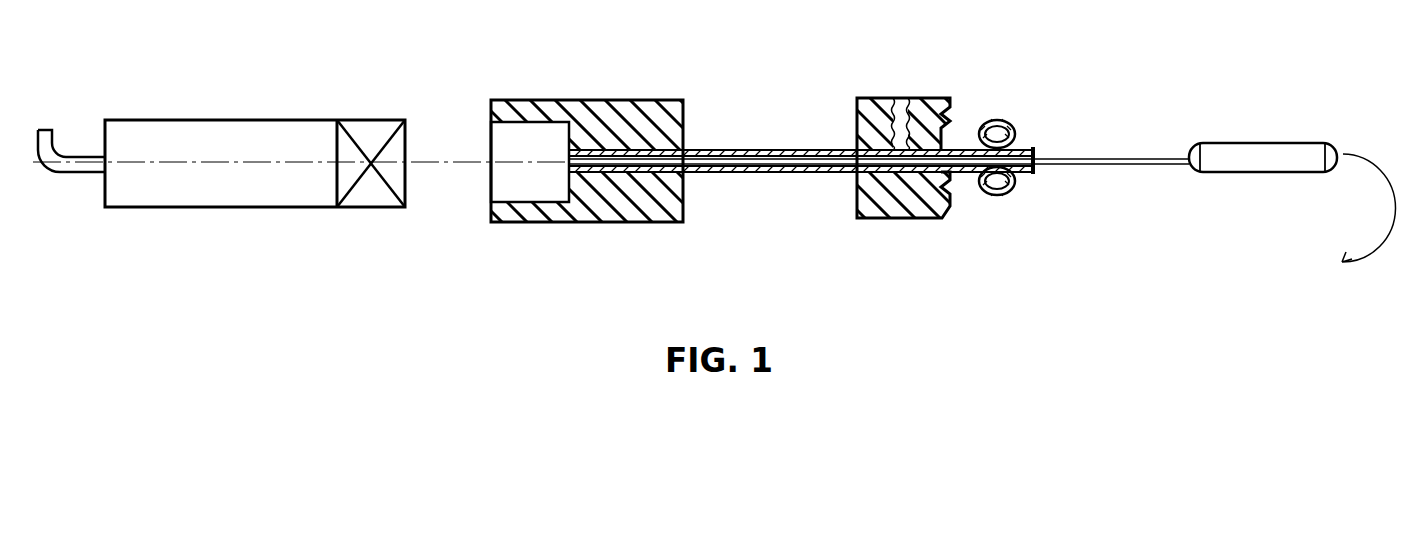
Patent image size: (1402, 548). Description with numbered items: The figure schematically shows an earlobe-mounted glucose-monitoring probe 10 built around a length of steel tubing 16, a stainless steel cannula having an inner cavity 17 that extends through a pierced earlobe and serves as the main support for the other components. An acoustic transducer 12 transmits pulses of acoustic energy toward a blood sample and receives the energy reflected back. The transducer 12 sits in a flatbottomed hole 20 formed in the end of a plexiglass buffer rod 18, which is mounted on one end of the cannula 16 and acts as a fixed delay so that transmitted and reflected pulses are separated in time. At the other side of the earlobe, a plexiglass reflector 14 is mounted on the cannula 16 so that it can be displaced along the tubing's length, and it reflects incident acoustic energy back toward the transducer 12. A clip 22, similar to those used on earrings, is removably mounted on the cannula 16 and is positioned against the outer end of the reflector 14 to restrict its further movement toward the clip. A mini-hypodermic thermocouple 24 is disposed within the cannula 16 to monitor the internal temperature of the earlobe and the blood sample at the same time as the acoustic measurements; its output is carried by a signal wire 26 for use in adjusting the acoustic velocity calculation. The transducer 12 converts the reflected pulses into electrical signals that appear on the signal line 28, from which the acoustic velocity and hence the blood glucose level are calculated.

The glucose-monitoring probe 10 is at (613, 58).
The acoustic transducer 12 is at (300, 89).
The reflector 14 is at (900, 100).
The steel tubing 16 is at (760, 150).
The inner cavity 17 is at (773, 172).
The buffer rod 18 is at (684, 118).
The flatbottomed hole 20 is at (500, 187).
The clip 22 is at (1005, 195).
The mini-hypodermic thermocouple 24 is at (1262, 172).
The signal wire 26 is at (1392, 207).
The signal line 28 is at (43, 130).